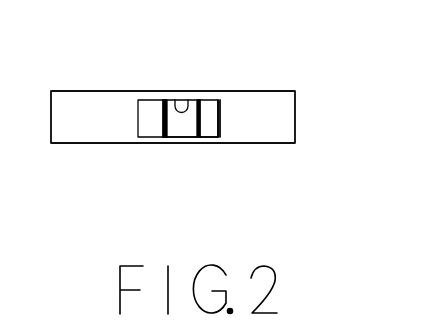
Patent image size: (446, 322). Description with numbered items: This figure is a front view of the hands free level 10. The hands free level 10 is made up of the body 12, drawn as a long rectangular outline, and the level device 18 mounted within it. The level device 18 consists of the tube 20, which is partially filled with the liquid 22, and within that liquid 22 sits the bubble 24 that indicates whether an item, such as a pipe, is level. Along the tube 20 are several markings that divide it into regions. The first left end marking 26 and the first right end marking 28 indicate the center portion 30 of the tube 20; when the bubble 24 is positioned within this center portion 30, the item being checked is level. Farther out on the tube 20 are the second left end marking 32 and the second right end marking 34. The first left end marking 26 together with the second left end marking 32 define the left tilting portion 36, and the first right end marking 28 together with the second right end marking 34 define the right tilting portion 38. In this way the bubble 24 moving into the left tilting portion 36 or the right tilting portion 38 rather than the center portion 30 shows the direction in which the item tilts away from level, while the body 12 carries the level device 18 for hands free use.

The hands free level 10 is at (267, 77).
The body 12 is at (288, 118).
The level device 18 is at (178, 154).
The tube 20 is at (220, 121).
The liquid 22 is at (218, 100).
The bubble 24 is at (182, 100).
The first left end marking 26 is at (167, 137).
The first right end marking 28 is at (197, 124).
The center portion 30 is at (181, 123).
The second left end marking 32 is at (162, 113).
The second right end marking 34 is at (205, 100).
The left tilting portion 36 is at (163, 117).
The right tilting portion 38 is at (209, 113).